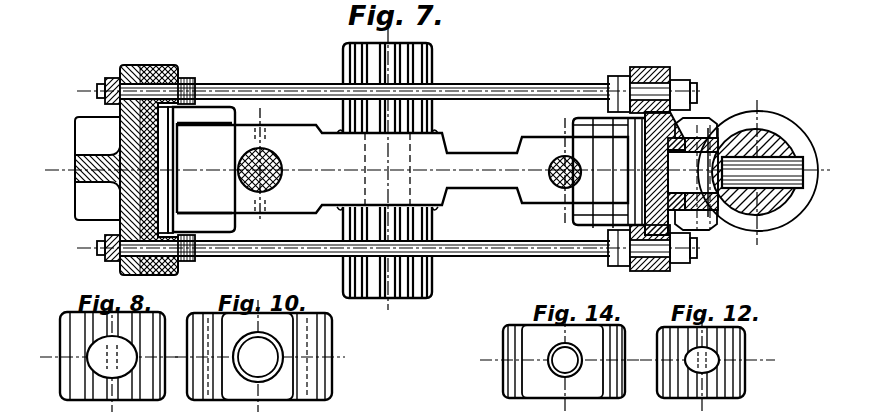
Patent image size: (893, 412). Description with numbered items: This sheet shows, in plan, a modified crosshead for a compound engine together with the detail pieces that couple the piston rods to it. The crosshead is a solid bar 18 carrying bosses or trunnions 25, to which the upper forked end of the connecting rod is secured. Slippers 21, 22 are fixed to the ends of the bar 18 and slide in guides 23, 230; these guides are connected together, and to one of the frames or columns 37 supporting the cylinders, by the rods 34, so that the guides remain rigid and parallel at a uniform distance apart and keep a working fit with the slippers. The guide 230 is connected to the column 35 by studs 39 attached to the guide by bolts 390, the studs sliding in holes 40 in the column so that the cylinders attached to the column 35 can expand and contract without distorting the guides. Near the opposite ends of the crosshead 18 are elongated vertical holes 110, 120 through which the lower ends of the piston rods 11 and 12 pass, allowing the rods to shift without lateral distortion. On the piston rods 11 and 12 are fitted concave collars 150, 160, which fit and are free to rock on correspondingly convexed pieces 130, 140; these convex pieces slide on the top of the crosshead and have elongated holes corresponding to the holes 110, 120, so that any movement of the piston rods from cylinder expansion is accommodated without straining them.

In FIG. 7, the piston rod 11 is at (549, 169).
In FIG. 7, the piston rod 12 is at (267, 153).
In FIG. 7, the bar 18 is at (402, 169).
In FIG. 7, the slipper 21 is at (178, 133).
In FIG. 7, the slipper 22 is at (575, 122).
In FIG. 7, the guide 23 is at (160, 192).
In FIG. 7, the bosses or trunnions 25 is at (357, 61).
In FIG. 7, the rods 34 is at (247, 83).
In FIG. 7, the column 35 is at (770, 218).
In FIG. 7, the frame or column 37 is at (88, 198).
In FIG. 7, the studs 39 is at (793, 150).
In FIG. 7, the holes 40 is at (792, 202).
In FIG. 7, the elongated vertical hole 110 is at (560, 177).
In FIG. 7, the elongated vertical hole 120 is at (282, 185).
In FIG. 8, the convexed piece 130 is at (158, 318).
In FIG. 12, the convexed piece 140 is at (745, 380).
In FIG. 10, the concave collar 150 is at (330, 372).
In FIG. 14, the concave collar 160 is at (525, 377).
In FIG. 7, the guide 230 is at (694, 83).
In FIG. 7, the bolts 390 is at (700, 115).